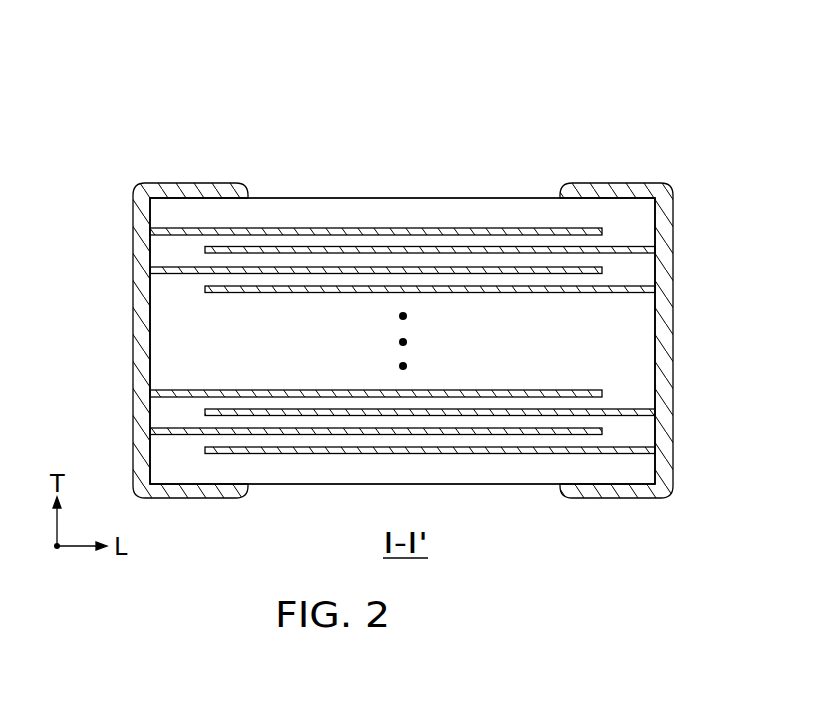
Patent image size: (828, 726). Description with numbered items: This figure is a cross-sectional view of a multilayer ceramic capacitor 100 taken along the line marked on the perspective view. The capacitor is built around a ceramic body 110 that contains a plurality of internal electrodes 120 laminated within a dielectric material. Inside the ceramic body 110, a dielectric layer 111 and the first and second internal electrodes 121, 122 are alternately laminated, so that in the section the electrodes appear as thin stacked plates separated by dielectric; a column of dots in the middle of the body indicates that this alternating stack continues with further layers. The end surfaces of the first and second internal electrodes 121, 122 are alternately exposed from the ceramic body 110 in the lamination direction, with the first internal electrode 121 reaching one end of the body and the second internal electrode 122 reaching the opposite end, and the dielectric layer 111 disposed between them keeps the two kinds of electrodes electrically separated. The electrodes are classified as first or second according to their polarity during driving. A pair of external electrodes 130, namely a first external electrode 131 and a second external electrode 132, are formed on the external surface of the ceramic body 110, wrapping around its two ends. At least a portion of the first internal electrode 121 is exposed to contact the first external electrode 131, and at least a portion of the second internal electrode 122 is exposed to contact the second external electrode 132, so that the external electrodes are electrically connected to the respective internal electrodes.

The multilayer ceramic capacitor 100 is at (238, 50).
The ceramic body 110 is at (290, 198).
The dielectric layer 111 is at (360, 237).
The internal electrodes 120 is at (520, 147).
The first internal electrode 121 is at (445, 230).
The second internal electrode 122 is at (527, 250).
The external electrodes 130 is at (652, 94).
The first external electrode 131 is at (187, 183).
The second external electrode 132 is at (620, 183).